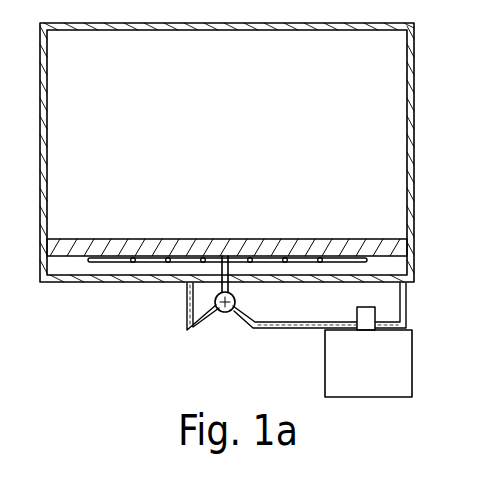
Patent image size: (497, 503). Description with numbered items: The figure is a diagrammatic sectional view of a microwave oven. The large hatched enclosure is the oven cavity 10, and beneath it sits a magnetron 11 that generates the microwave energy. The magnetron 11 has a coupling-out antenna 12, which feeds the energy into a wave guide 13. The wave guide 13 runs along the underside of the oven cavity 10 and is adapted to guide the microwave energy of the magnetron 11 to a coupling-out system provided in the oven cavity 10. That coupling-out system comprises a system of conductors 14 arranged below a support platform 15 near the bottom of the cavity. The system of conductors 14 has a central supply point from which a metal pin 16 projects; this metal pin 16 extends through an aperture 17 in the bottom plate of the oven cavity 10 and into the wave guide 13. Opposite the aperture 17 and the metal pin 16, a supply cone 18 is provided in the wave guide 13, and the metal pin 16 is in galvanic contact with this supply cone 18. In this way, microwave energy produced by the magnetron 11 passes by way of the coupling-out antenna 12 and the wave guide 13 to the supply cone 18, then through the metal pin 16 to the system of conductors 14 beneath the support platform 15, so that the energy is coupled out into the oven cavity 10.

The oven cavity 10 is at (416, 141).
The magnetron 11 is at (392, 353).
The coupling-out antenna 12 is at (365, 315).
The wave guide 13 is at (281, 328).
The system of conductors 14 is at (279, 258).
The support platform 15 is at (110, 250).
The metal pin 16 is at (236, 275).
The aperture 17 is at (219, 276).
The supply cone 18 is at (205, 322).